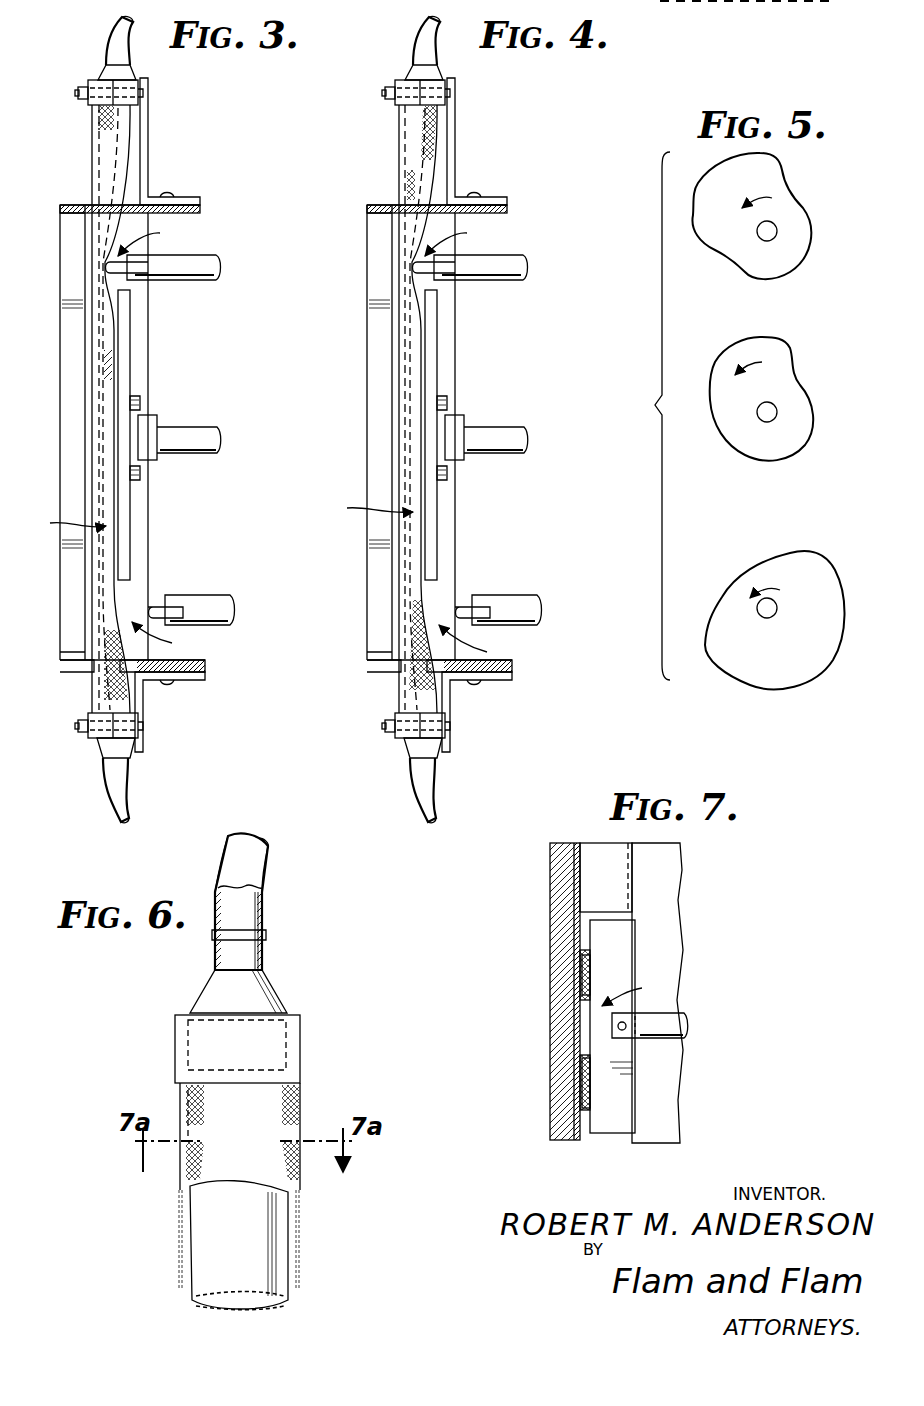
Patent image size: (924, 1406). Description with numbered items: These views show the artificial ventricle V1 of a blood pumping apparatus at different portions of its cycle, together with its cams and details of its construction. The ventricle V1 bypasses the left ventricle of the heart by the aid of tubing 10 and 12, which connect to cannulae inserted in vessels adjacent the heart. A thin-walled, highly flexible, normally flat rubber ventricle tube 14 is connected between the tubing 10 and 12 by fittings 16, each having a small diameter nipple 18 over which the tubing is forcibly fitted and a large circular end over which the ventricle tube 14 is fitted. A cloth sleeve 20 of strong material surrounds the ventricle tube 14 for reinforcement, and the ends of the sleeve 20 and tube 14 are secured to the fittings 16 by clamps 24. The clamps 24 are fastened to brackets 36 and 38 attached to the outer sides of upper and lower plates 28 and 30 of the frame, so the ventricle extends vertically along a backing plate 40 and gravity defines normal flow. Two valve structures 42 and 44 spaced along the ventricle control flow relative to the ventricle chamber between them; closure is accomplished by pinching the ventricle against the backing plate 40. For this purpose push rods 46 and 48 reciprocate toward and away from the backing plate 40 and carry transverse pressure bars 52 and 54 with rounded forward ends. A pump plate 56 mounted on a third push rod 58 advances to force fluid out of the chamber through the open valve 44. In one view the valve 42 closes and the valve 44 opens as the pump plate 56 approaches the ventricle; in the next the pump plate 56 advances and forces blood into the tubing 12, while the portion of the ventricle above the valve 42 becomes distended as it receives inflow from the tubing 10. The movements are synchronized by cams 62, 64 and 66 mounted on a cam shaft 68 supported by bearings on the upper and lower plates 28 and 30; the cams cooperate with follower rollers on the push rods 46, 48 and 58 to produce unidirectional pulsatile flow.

In FIG. 3, the tubing 10 is at (116, 38).
In FIG. 4, the tubing 10 is at (412, 40).
In FIG. 6, the tubing 10 is at (262, 872).
In FIG. 3, the tubing 12 is at (106, 804).
In FIG. 4, the tubing 12 is at (449, 790).
In FIG. 3, the ventricle tube 14 is at (96, 155).
In FIG. 4, the ventricle tube 14 is at (388, 407).
In FIG. 6, the ventricle tube 14 is at (206, 1238).
In FIG. 7, the ventricle tube 14 is at (578, 960).
In FIG. 3, the fitting 16 is at (133, 70).
In FIG. 4, the fitting 16 is at (432, 413).
In FIG. 6, the fitting 16 is at (214, 992).
In FIG. 6, the nipple 18 is at (252, 950).
In FIG. 3, the cloth sleeve 20 is at (120, 180).
In FIG. 4, the cloth sleeve 20 is at (457, 409).
In FIG. 6, the cloth sleeve 20 is at (265, 1114).
In FIG. 7, the cloth sleeve 20 is at (580, 985).
In FIG. 3, the clamp 24 is at (100, 86).
In FIG. 4, the clamp 24 is at (401, 402).
In FIG. 6, the clamp 24 is at (208, 1050).
In FIG. 3, the upper plate 28 is at (195, 212).
In FIG. 4, the upper plate 28 is at (472, 216).
In FIG. 3, the lower plate 30 is at (206, 666).
In FIG. 4, the lower plate 30 is at (470, 679).
In FIG. 7, the lower plate 30 is at (665, 900).
In FIG. 3, the bracket 36 is at (150, 128).
In FIG. 4, the bracket 36 is at (481, 141).
In FIG. 3, the bracket 38 is at (145, 702).
In FIG. 4, the bracket 38 is at (477, 712).
In FIG. 3, the backing plate 40 is at (88, 316).
In FIG. 4, the backing plate 40 is at (420, 432).
In FIG. 7, the backing plate 40 is at (575, 1015).
In FIG. 3, the valve structure 42 is at (155, 239).
In FIG. 4, the valve structure 42 is at (464, 239).
In FIG. 3, the valve structure 44 is at (170, 643).
In FIG. 4, the valve structure 44 is at (479, 646).
In FIG. 7, the valve structure 44 is at (640, 988).
In FIG. 3, the push rod 46 is at (208, 262).
In FIG. 4, the push rod 46 is at (496, 287).
In FIG. 3, the push rod 48 is at (212, 600).
In FIG. 4, the push rod 48 is at (526, 593).
In FIG. 7, the push rod 48 is at (660, 1030).
In FIG. 3, the pressure bar 52 is at (135, 273).
In FIG. 4, the pressure bar 52 is at (456, 290).
In FIG. 3, the pressure bar 54 is at (155, 610).
In FIG. 4, the pressure bar 54 is at (482, 586).
In FIG. 7, the pressure bar 54 is at (612, 1132).
In FIG. 3, the pump plate 56 is at (125, 352).
In FIG. 4, the pump plate 56 is at (474, 435).
In FIG. 3, the third push rod 58 is at (178, 437).
In FIG. 4, the third push rod 58 is at (495, 444).
In FIG. 5, the cam 62 is at (795, 208).
In FIG. 5, the cam 64 is at (812, 570).
In FIG. 5, the cam 66 is at (785, 378).
In FIG. 5, the cam shaft 68 is at (758, 240).
In FIG. 3, the ventricle V1 is at (64, 521).
In FIG. 4, the ventricle V1 is at (365, 504).